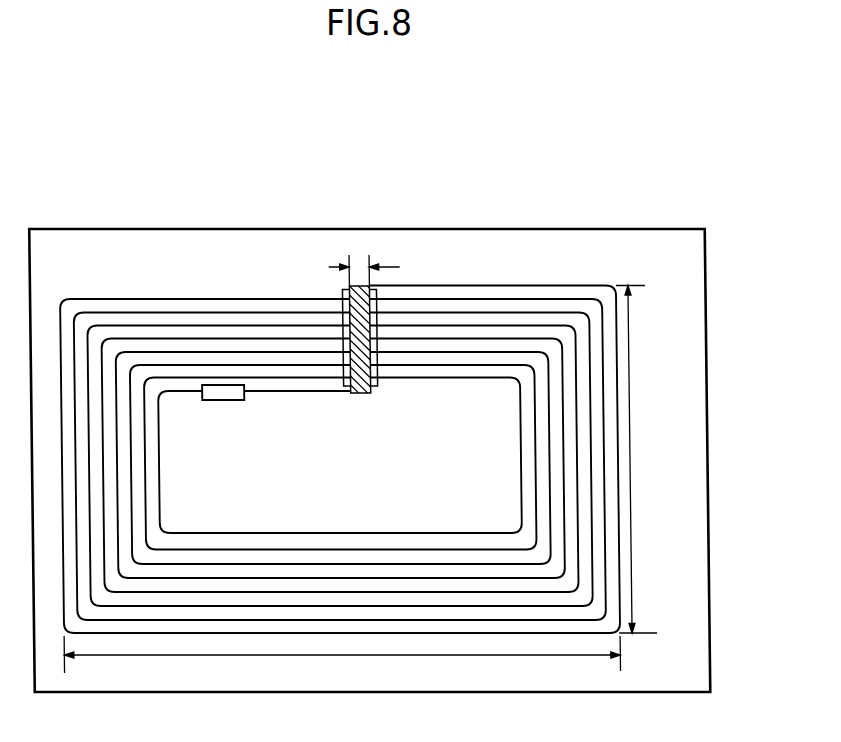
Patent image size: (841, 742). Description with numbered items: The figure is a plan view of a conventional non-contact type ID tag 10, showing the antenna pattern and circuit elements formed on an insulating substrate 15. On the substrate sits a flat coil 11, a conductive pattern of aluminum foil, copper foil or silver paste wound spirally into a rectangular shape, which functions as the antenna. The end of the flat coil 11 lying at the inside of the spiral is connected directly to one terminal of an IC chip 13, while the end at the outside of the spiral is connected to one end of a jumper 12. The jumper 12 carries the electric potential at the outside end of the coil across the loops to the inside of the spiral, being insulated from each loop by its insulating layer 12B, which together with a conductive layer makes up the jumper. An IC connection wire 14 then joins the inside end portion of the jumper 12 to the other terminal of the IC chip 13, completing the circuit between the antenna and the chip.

The ID tag 10 is at (102, 208).
The flat coil 11 is at (528, 285).
The jumper 12 is at (362, 395).
The insulating layer 12B is at (377, 317).
The IC chip 13 is at (222, 400).
The IC connection wire 14 is at (330, 393).
The insulating substrate 15 is at (244, 257).